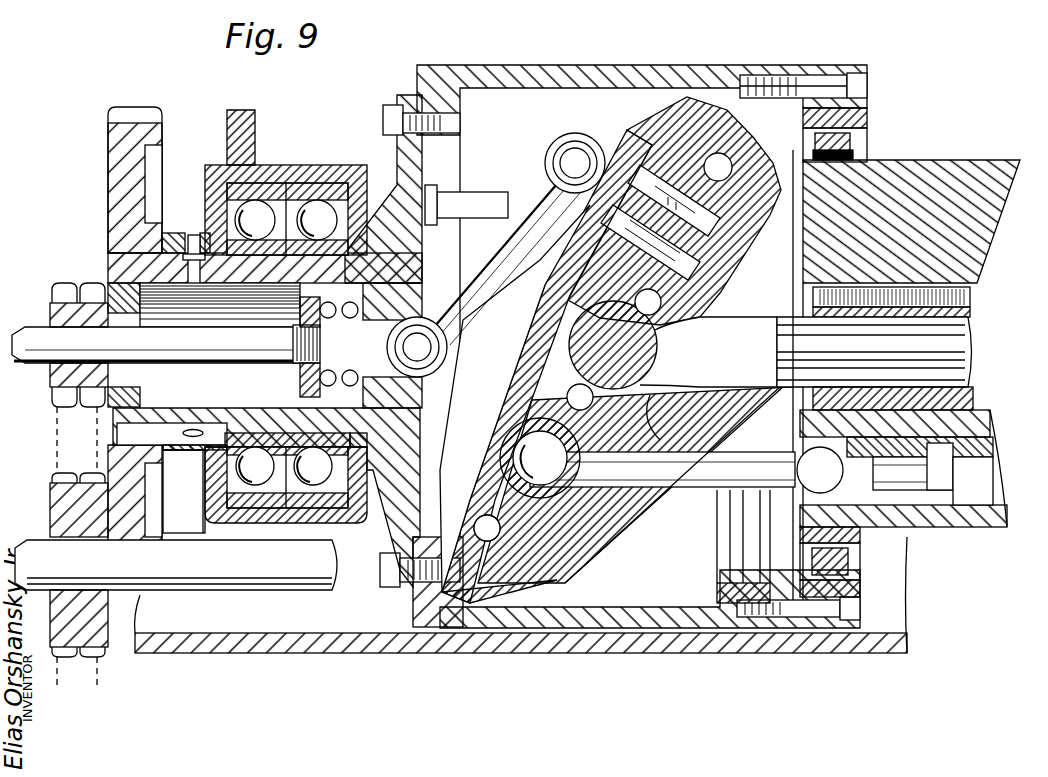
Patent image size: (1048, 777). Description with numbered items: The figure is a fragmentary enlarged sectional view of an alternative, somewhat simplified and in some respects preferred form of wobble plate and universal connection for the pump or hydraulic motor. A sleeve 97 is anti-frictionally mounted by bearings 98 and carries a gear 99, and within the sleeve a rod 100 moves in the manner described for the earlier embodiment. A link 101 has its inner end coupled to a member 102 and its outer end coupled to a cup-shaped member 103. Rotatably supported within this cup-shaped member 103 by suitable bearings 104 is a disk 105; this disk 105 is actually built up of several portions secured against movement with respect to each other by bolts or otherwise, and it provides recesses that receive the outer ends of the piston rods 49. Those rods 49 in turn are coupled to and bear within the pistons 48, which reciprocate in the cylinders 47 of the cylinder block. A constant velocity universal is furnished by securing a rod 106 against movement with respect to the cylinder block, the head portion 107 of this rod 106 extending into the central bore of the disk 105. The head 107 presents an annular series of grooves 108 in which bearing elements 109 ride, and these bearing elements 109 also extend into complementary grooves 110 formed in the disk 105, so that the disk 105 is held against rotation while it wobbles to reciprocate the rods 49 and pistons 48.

The cylinders 47 is at (983, 517).
The pistons 48 is at (937, 537).
The rods 49 is at (702, 488).
The sleeve 97 is at (165, 262).
The bearings 98 is at (257, 217).
The gear 99 is at (108, 159).
The rod 100 is at (200, 343).
The link 101 is at (545, 190).
The member 102 is at (410, 285).
The cup-shaped member 103 is at (670, 118).
The bearings 104 is at (480, 568).
The disk 105 is at (570, 568).
The rod 106 is at (950, 352).
The head portion 107 is at (567, 330).
The grooves 108 is at (557, 290).
The bearing elements 109 is at (652, 428).
The grooves 110 is at (547, 390).